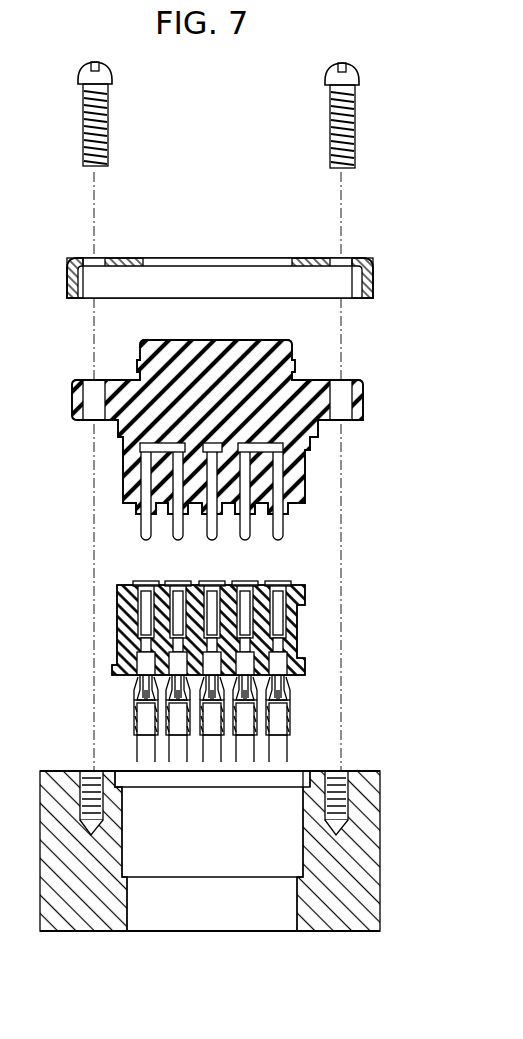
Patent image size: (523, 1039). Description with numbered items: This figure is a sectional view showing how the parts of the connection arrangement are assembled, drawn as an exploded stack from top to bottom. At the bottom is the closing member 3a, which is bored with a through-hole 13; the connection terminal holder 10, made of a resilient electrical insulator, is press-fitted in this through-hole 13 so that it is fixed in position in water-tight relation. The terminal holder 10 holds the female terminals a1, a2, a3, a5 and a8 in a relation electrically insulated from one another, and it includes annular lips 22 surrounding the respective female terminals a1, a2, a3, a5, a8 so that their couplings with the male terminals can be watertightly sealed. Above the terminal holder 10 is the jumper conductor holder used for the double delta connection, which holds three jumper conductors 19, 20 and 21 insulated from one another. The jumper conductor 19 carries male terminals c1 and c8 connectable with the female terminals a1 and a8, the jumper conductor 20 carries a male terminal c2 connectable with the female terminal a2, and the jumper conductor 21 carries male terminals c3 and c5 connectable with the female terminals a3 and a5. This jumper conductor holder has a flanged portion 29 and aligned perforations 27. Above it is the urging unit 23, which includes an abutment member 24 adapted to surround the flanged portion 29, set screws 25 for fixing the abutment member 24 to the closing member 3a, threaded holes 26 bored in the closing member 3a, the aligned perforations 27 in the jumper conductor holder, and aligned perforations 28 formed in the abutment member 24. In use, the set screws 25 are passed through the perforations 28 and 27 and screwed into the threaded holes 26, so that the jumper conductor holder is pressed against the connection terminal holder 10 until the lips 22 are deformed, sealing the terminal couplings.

The urging unit 23 is at (199, 190).
The set screws 25 is at (109, 103).
The abutment member 24 is at (222, 252).
The aligned perforations 28 is at (86, 258).
The flanged portion 29 is at (214, 440).
The aligned perforations 27 is at (85, 380).
The jumper conductor 20 is at (214, 442).
The jumper conductor 21 is at (140, 447).
The jumper conductor 19 is at (290, 447).
The male terminal c3 is at (142, 533).
The male terminal c5 is at (174, 539).
The male terminal c2 is at (208, 539).
The male terminal c8 is at (242, 537).
The male terminal c1 is at (285, 535).
The annular lips 22 is at (158, 584).
The female terminal a3 is at (140, 600).
The female terminal a5 is at (177, 592).
The female terminal a2 is at (211, 592).
The female terminal a8 is at (244, 592).
The female terminal a1 is at (280, 600).
The terminal holder 10 is at (220, 610).
The threaded holes 26 is at (88, 771).
The closing member 3a is at (232, 833).
The through-hole 13 is at (303, 862).